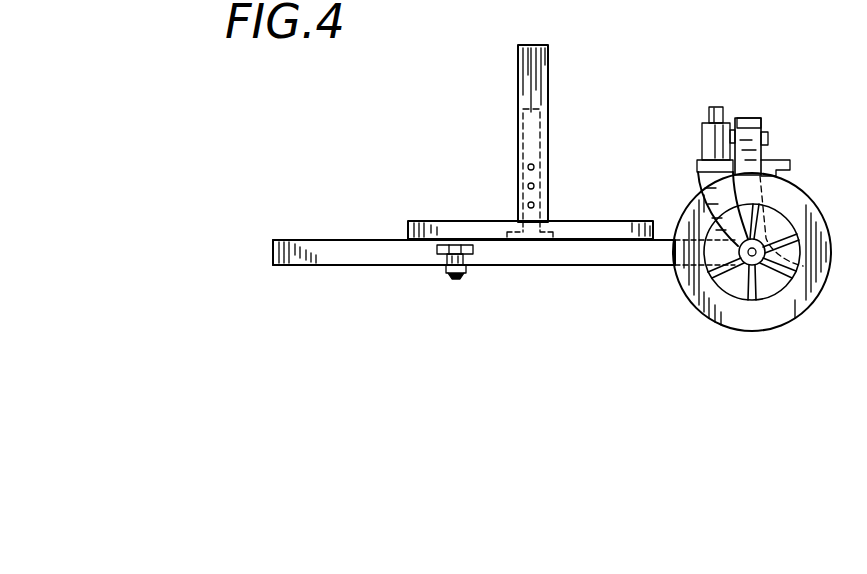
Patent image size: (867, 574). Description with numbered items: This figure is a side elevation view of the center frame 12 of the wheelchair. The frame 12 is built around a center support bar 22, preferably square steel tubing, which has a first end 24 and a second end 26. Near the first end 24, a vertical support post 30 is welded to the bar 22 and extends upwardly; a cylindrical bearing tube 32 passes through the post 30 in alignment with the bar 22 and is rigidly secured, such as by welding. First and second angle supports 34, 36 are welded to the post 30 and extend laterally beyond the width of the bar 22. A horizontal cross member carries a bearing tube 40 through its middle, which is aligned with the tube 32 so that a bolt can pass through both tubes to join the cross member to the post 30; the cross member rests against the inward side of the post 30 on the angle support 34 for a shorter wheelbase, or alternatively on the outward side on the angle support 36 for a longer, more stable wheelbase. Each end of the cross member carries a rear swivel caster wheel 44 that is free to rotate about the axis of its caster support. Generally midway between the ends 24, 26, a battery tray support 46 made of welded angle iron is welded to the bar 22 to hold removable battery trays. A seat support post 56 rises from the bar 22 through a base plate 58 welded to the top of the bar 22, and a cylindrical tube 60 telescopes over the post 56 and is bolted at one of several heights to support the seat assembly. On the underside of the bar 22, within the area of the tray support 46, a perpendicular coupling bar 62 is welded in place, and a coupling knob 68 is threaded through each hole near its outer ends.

The frame 12 is at (480, 172).
The center support bar 22 is at (317, 266).
The first end 24 is at (803, 266).
The second end 26 is at (273, 241).
The vertical support post 30 is at (758, 118).
The cylindrical bearing tube 32 is at (768, 136).
The first angle support 34 is at (720, 146).
The second angle support 36 is at (788, 159).
The bearing tube 40 is at (727, 108).
The rear swivel caster wheel 44 is at (676, 282).
The battery tray support 46 is at (408, 222).
The seat support post 56 is at (542, 127).
The base plate 58 is at (552, 222).
The cylindrical tube 60 is at (548, 82).
The coupling bar 62 is at (470, 280).
The coupling knob 68 is at (438, 267).